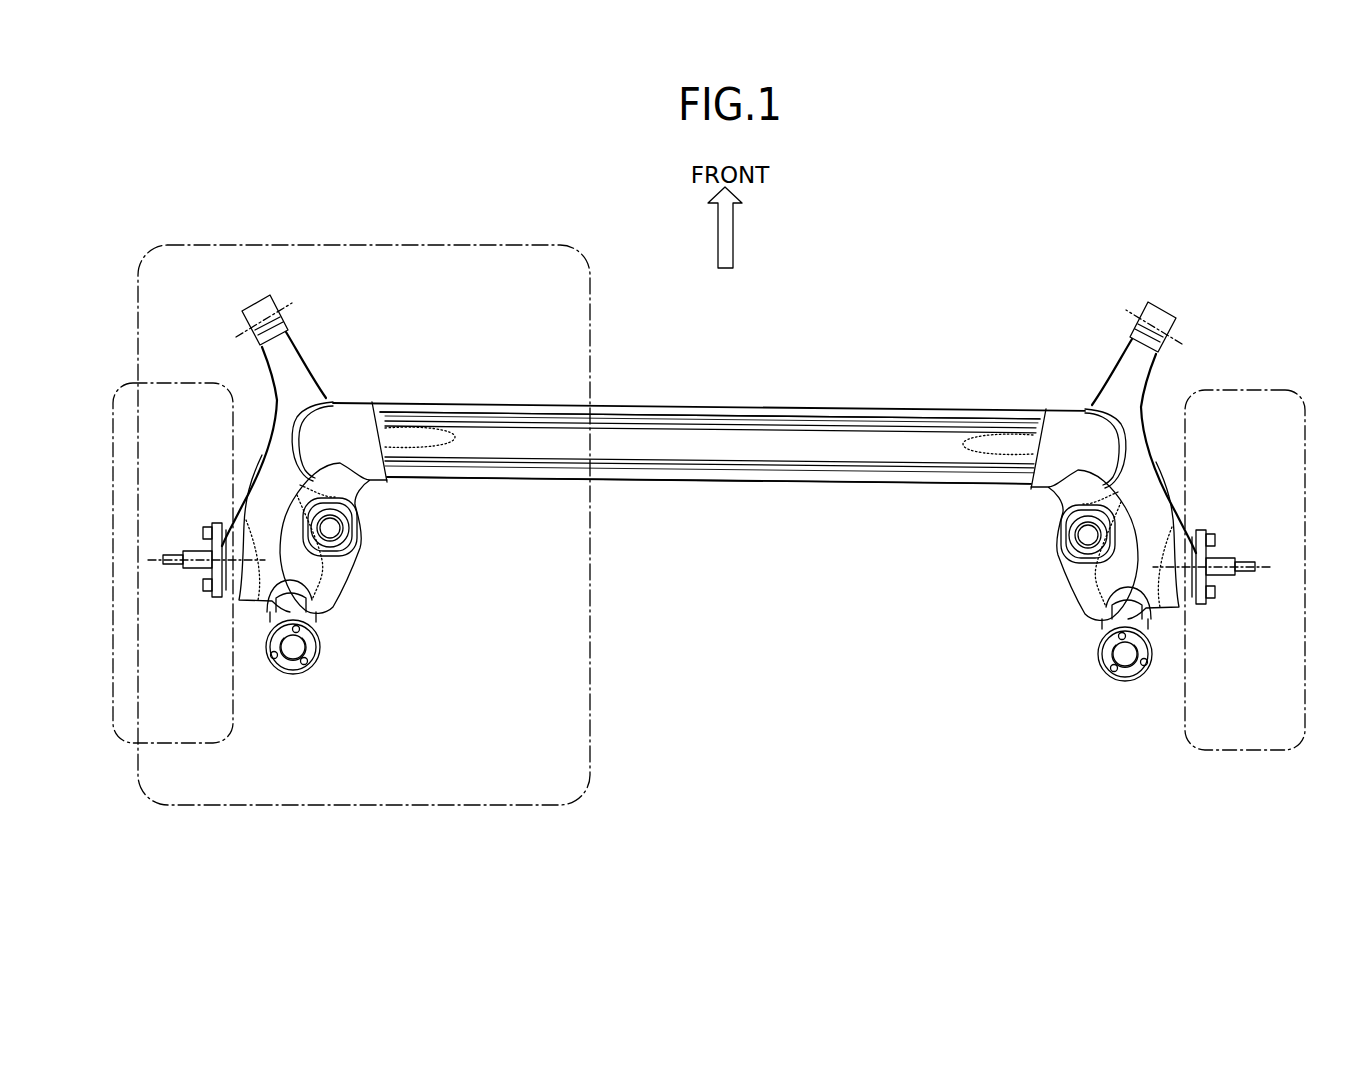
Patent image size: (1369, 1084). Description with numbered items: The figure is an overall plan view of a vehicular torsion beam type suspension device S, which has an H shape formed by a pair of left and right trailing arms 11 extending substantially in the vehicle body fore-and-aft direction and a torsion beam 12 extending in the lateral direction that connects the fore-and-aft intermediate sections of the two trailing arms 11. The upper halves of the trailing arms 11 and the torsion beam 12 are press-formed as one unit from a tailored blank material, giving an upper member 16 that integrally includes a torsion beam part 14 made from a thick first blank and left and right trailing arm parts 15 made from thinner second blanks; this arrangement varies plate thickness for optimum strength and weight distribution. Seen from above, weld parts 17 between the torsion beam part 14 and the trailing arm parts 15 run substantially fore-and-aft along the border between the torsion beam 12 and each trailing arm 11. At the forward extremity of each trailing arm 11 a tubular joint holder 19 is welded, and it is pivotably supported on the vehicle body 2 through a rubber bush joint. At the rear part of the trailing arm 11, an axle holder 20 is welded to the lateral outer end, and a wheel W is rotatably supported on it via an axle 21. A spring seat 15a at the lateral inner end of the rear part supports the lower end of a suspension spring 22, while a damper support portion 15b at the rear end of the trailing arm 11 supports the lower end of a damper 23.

The vehicle body 2 is at (600, 705).
The torsion beam type suspension device S is at (841, 354).
The wheel W is at (197, 383).
The trailing arm 11 is at (262, 420).
The torsion beam 12 is at (715, 393).
The torsion beam part 14 is at (702, 485).
The trailing arm part 15 is at (250, 469).
The spring seat 15a is at (362, 553).
The damper support portion 15b is at (327, 608).
The upper member 16 is at (853, 437).
The weld part 17 is at (378, 433).
The joint holder 19 is at (268, 306).
The axle holder 20 is at (215, 580).
The axle 21 is at (173, 570).
The suspension spring 22 is at (348, 520).
The damper 23 is at (292, 672).